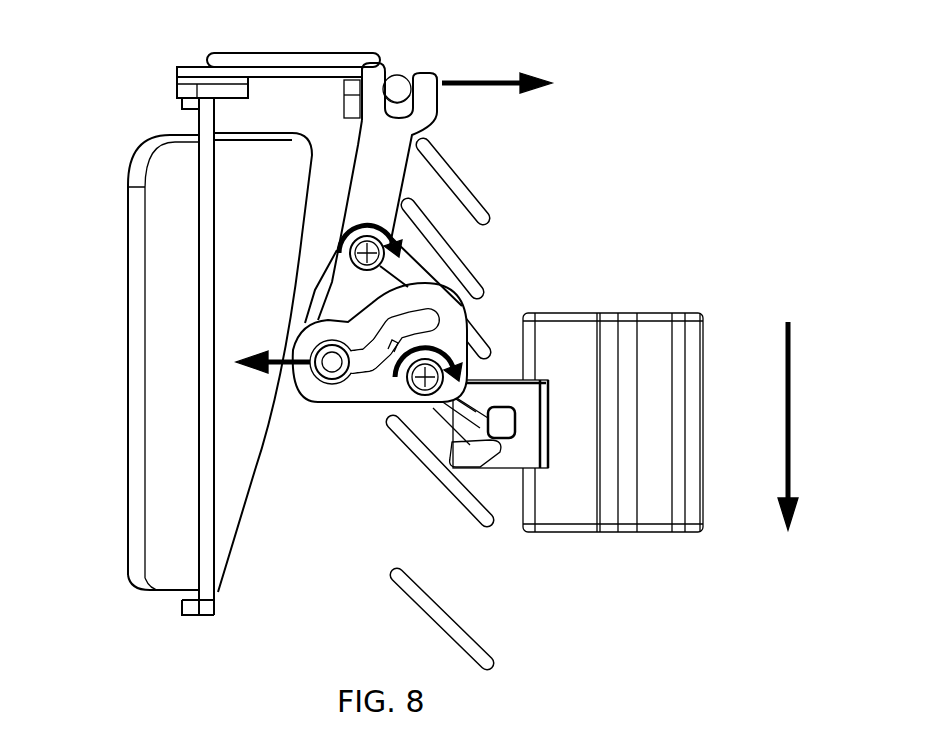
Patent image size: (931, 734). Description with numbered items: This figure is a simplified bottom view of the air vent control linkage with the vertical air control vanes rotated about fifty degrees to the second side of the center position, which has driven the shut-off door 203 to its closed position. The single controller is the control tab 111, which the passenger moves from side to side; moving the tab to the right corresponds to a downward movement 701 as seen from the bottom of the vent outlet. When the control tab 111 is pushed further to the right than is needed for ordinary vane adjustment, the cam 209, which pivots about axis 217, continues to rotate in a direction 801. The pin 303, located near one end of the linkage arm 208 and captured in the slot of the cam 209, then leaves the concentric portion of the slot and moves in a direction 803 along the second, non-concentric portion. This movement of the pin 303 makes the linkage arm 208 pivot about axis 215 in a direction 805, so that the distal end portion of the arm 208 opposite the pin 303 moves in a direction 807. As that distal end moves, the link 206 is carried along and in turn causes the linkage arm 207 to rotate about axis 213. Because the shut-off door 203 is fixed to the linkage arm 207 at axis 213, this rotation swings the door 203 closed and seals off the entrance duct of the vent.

The control tab 111 is at (653, 398).
The shut-off door 203 is at (152, 398).
The link 206 is at (248, 62).
The linkage arm 207 is at (167, 85).
The linkage arm 208 is at (383, 180).
The cam 209 is at (358, 330).
The axis 213 is at (198, 625).
The axis 215 is at (375, 258).
The axis 217 is at (424, 386).
The pin 303 is at (334, 366).
The downward movement 701 is at (790, 425).
The direction 801 is at (422, 345).
The direction 803 is at (270, 370).
The direction 805 is at (377, 233).
The direction 807 is at (488, 82).